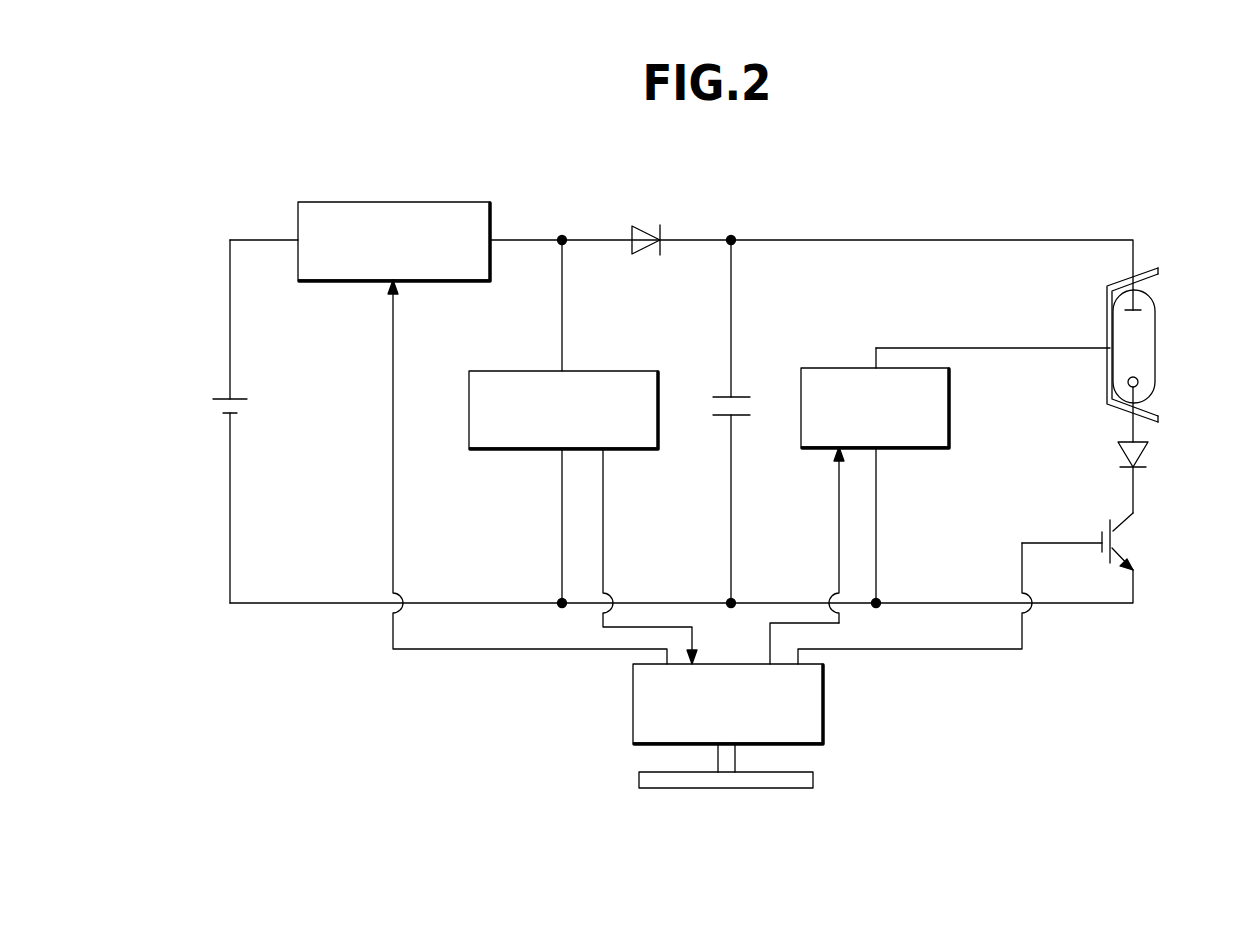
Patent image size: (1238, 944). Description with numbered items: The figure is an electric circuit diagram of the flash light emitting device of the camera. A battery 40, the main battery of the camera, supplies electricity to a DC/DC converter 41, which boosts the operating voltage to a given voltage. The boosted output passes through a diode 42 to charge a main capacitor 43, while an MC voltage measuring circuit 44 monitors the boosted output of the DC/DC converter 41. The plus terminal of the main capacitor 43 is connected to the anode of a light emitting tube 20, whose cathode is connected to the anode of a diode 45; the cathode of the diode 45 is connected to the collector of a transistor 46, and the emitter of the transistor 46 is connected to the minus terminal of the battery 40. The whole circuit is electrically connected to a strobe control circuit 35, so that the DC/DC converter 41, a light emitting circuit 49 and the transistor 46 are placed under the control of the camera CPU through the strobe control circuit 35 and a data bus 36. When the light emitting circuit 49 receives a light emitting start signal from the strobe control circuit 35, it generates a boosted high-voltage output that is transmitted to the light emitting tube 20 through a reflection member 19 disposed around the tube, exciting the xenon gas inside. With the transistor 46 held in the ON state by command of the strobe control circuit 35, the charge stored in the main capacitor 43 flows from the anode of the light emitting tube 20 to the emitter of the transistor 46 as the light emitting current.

The reflection member 19 is at (1143, 275).
The light emitting tube 20 is at (1155, 333).
The strobe control circuit 35 is at (823, 700).
The data bus 36 is at (745, 788).
The battery 40 is at (220, 397).
The DC/DC converter 41 is at (350, 202).
The diode 42 is at (632, 228).
The main capacitor 43 is at (742, 393).
The MC voltage measuring circuit 44 is at (500, 370).
The diode 45 is at (1148, 450).
The transistor 46 is at (1133, 515).
The light emitting circuit 49 is at (845, 368).